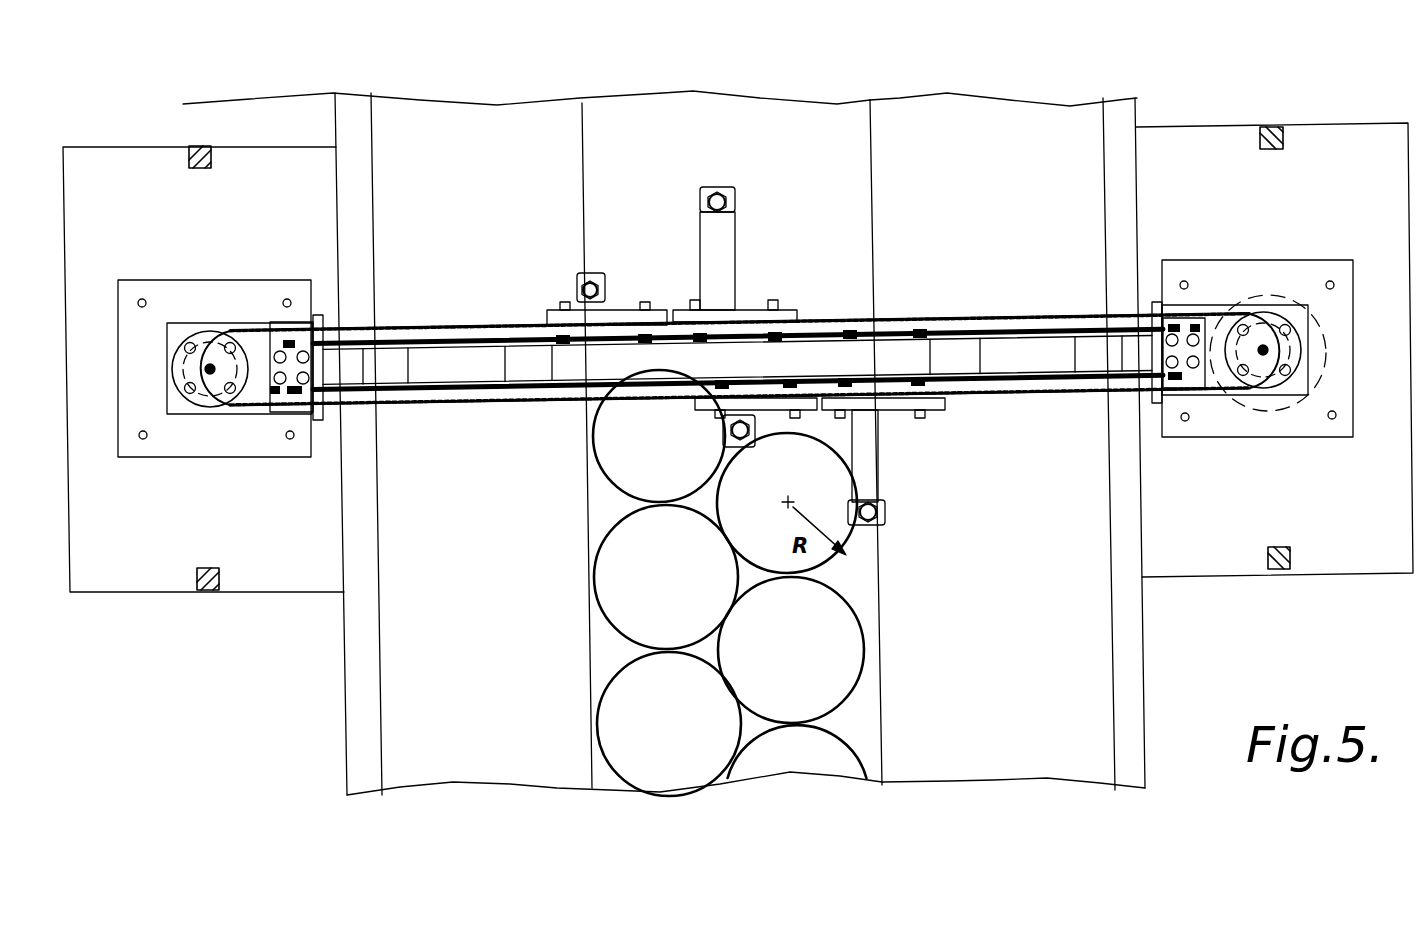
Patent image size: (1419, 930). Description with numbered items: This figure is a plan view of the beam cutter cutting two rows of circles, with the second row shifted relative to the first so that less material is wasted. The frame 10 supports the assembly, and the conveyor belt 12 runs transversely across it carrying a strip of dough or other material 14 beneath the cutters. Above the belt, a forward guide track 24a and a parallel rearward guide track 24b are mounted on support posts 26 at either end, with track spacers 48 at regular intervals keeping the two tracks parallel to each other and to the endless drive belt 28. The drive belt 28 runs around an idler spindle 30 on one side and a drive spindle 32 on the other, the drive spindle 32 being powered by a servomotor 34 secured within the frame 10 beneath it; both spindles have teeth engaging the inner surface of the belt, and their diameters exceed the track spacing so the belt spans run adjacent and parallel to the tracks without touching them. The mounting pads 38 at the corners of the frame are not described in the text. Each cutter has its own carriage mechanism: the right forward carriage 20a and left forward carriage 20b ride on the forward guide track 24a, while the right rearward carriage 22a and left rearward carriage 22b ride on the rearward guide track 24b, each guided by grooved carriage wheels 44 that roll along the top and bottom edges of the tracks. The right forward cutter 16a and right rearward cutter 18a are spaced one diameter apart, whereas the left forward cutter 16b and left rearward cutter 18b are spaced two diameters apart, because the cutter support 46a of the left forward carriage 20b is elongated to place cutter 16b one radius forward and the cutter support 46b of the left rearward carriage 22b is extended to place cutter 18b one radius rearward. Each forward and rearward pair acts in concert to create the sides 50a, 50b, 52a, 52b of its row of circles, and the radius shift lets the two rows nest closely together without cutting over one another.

The frame 10 is at (1362, 124).
The conveyor belt 12 is at (1036, 118).
The strip of dough or other material 14 is at (756, 120).
The right forward cutter 16a is at (725, 435).
The left forward cutter 16b is at (886, 512).
The right rearward cutter 18a is at (578, 290).
The left rearward cutter 18b is at (700, 200).
The right forward carriage 20a is at (758, 414).
The left forward carriage 20b is at (930, 412).
The right rearward carriage 22a is at (635, 311).
The left rearward carriage 22b is at (790, 311).
The forward guide track 24a is at (1015, 396).
The rearward guide track 24b is at (1025, 320).
The support posts 26 is at (288, 332).
The endless drive belt 28 is at (1215, 308).
The idler spindle 30 is at (218, 398).
The drive spindle 32 is at (1260, 393).
The servomotor 34 is at (1290, 440).
The mounting pad 38 is at (190, 150).
The carriage wheels 44 is at (545, 325).
The cutter support 46a is at (880, 472).
The cutter support 46b is at (735, 228).
The track spacers 48 is at (395, 350).
The side of a row of circles 50a is at (596, 772).
The side of a row of circles 50b is at (758, 750).
The side of a row of circles 52a is at (726, 770).
The side of a row of circles 52b is at (870, 760).